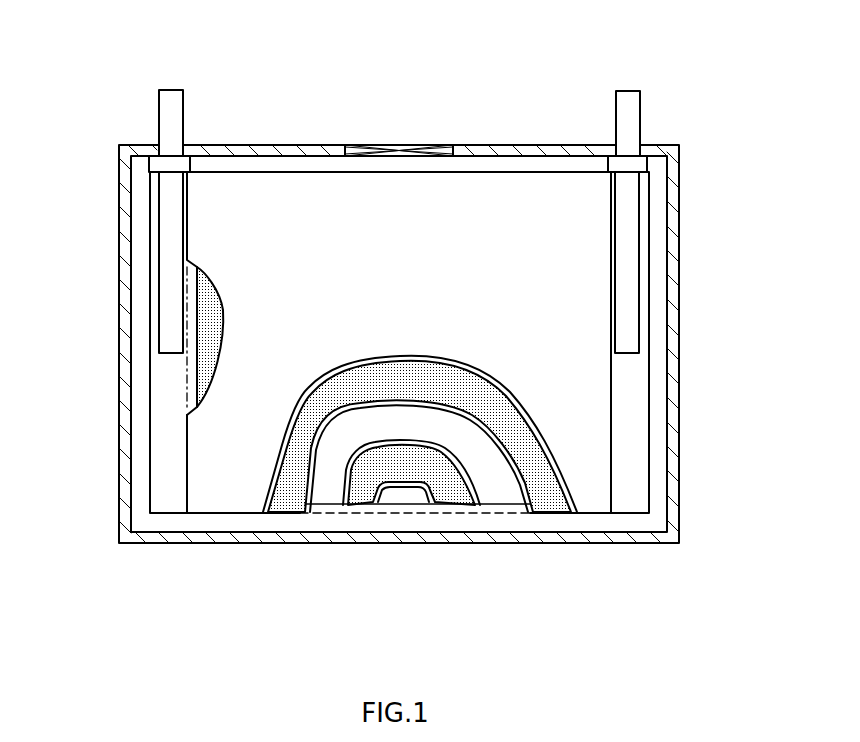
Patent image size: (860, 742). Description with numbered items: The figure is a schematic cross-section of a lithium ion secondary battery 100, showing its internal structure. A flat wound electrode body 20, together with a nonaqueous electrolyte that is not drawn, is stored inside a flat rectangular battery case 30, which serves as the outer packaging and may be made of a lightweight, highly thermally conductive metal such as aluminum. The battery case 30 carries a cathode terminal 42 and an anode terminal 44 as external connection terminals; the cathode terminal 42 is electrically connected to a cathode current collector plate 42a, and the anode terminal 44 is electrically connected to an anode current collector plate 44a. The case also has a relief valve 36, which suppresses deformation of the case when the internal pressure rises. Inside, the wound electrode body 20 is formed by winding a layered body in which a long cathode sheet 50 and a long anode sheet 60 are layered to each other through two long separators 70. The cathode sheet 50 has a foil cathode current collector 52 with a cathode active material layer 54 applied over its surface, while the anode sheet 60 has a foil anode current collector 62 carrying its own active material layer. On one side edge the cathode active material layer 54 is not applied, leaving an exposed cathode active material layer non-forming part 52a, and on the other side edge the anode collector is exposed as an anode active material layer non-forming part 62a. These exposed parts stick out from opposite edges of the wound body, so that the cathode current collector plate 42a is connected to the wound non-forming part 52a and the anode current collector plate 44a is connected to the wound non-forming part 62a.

The lithium ion secondary battery 100 is at (690, 103).
The wound electrode body 20 is at (288, 188).
The battery case 30 is at (690, 261).
The relief valve 36 is at (400, 145).
The cathode terminal 42 is at (170, 98).
The cathode current collector plate 42a is at (172, 240).
The anode terminal 44 is at (623, 95).
The anode current collector plate 44a is at (628, 205).
The cathode sheet 50 is at (285, 497).
The cathode current collector 52 is at (150, 402).
The cathode active material layer non-forming part 52a is at (163, 488).
The cathode active material layer 54 is at (210, 307).
The anode sheet 60 is at (363, 493).
The anode current collector 62 is at (649, 367).
The anode active material layer non-forming part 62a is at (633, 412).
The separator 70 is at (225, 445).